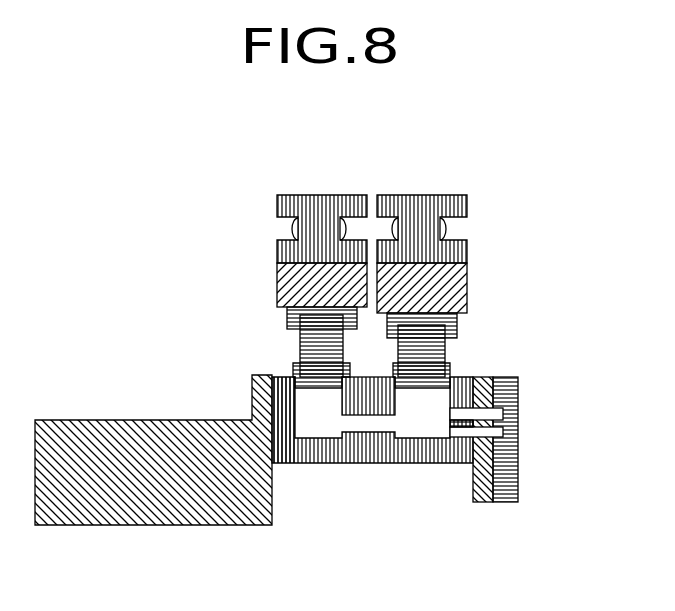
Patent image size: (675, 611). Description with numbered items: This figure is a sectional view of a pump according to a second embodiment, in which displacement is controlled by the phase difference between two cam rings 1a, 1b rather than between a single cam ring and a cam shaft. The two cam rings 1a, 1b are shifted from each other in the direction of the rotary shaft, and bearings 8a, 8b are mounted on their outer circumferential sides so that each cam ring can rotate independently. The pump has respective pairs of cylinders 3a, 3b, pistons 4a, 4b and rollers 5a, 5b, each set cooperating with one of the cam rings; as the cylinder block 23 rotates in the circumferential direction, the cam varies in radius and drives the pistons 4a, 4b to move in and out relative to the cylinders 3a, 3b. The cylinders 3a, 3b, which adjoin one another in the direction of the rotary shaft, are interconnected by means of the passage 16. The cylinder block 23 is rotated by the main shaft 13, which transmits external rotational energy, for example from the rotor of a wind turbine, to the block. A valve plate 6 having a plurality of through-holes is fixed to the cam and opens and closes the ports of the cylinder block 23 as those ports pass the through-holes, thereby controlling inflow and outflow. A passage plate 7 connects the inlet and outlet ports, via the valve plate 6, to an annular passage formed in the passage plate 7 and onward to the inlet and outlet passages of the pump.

The cam ring 1a is at (278, 282).
The cam ring 1b is at (467, 312).
The cylinder 3a is at (292, 374).
The cylinder 3b is at (448, 376).
The piston 4a is at (300, 350).
The piston 4b is at (447, 357).
The roller 5a is at (286, 310).
The roller 5b is at (457, 322).
The valve plate 6 is at (483, 493).
The passage plate 7 is at (510, 490).
The bearing 8a is at (277, 196).
The bearing 8b is at (430, 202).
The main shaft 13 is at (63, 453).
The passage 16 is at (373, 418).
The cylinder block 23 is at (283, 418).